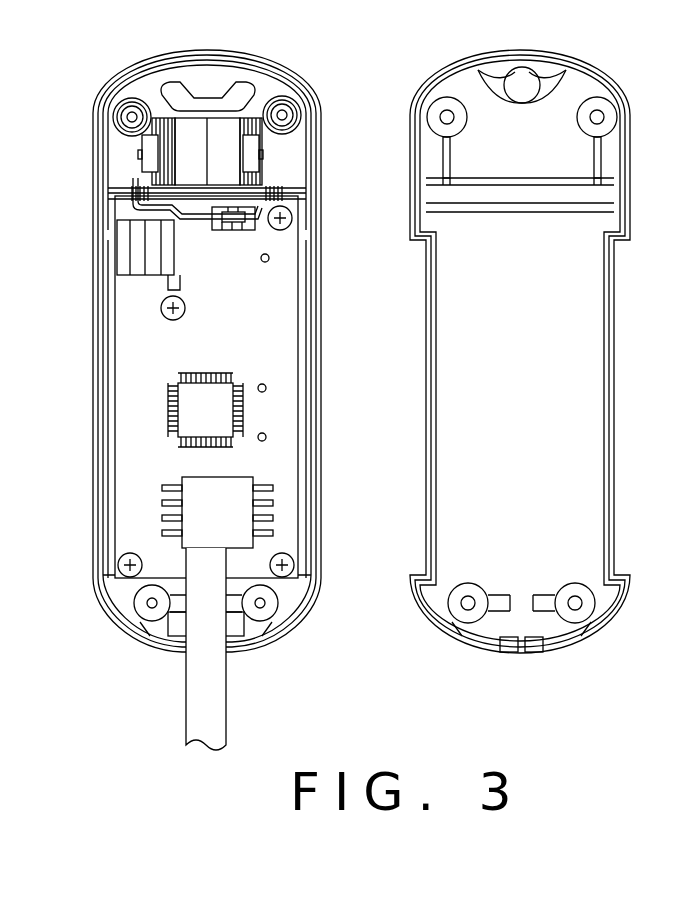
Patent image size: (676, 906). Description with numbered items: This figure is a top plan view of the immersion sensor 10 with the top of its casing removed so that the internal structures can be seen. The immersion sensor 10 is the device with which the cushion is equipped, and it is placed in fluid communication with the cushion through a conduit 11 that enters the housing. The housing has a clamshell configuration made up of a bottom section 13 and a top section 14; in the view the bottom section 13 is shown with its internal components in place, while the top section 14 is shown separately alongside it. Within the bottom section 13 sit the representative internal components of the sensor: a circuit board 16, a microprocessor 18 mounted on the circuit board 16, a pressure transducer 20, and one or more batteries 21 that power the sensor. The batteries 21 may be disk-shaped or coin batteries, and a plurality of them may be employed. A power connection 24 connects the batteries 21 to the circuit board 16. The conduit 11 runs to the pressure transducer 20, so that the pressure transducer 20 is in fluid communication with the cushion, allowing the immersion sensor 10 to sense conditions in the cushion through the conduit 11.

The immersion sensor 10 is at (300, 645).
The conduit 11 is at (227, 698).
The bottom section 13 is at (206, 386).
The top section 14 is at (618, 618).
The circuit board 16 is at (142, 443).
The microprocessor 18 is at (193, 397).
The pressure transducer 20 is at (198, 496).
The batteries 21 is at (222, 145).
The power connection 24 is at (257, 232).